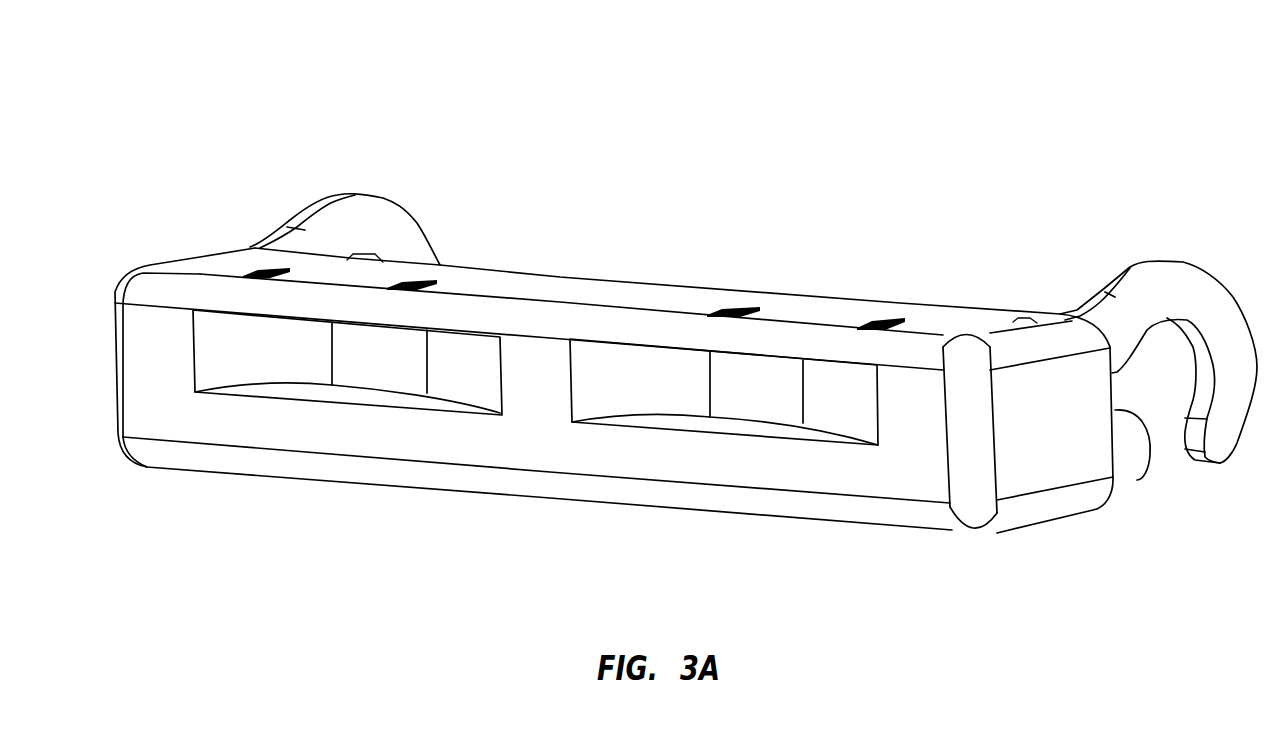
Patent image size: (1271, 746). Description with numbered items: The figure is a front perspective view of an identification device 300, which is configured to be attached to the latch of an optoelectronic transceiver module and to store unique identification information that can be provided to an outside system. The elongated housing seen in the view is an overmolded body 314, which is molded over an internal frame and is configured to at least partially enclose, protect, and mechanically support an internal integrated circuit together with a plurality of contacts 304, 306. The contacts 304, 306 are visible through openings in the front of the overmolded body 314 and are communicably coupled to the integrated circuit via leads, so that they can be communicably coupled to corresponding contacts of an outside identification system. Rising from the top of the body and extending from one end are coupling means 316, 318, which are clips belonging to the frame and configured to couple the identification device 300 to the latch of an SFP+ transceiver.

The identification device 300 is at (295, 117).
The contact 304 is at (398, 367).
The contact 306 is at (771, 399).
The overmolded body 314 is at (625, 293).
The coupling means 316 is at (358, 195).
The coupling means 318 is at (1148, 262).